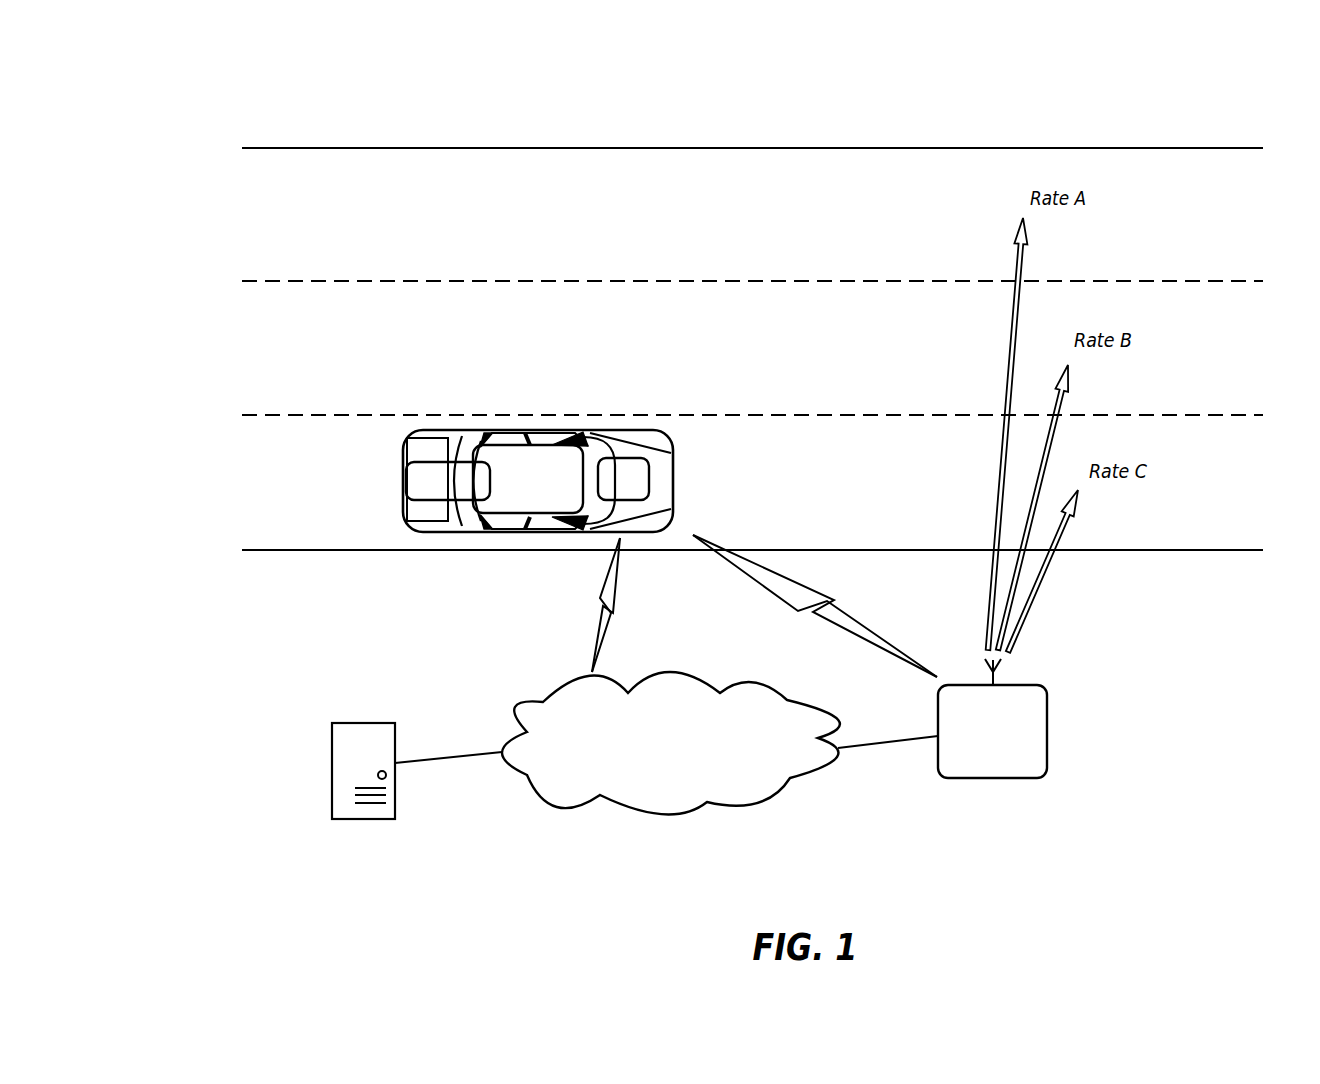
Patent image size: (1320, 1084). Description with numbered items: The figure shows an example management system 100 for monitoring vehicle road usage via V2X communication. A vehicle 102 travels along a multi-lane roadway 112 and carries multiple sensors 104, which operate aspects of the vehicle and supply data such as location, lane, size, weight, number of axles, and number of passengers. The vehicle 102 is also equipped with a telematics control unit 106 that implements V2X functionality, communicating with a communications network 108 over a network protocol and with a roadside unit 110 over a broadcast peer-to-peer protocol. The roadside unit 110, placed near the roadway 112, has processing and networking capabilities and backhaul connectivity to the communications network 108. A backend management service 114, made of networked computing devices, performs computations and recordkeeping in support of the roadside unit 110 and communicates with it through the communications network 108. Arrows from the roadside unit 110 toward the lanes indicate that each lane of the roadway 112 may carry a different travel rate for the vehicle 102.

The management system 100 is at (245, 64).
The vehicle 102 is at (513, 504).
The sensors 104 is at (405, 480).
The telematics control unit 106 is at (650, 478).
The communications network 108 is at (654, 772).
The roadside unit 110 is at (976, 757).
The roadway 112 is at (1058, 148).
The backend management service 114 is at (347, 905).